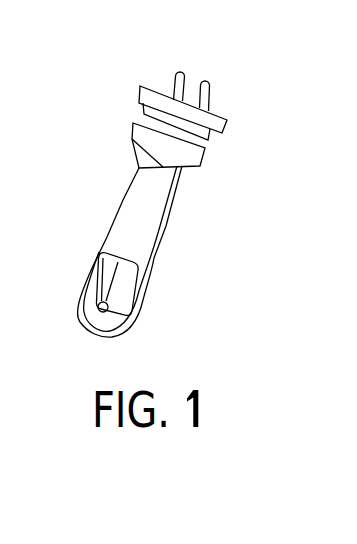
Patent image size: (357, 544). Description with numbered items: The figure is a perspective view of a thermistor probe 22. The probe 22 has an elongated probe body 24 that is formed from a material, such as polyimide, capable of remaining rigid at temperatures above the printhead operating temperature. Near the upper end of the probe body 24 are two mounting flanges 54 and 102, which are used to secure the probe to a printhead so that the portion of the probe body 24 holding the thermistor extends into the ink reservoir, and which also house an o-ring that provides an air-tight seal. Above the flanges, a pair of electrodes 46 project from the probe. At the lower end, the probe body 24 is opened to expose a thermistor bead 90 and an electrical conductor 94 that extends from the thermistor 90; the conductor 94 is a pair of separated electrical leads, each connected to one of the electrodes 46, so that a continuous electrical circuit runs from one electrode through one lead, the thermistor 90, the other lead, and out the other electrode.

The thermistor probe 22 is at (116, 197).
The probe body 24 is at (153, 204).
The electrodes 46 is at (198, 67).
The mounting flange 54 is at (210, 133).
The thermistor 90 is at (91, 307).
The electrical conductor 94 is at (100, 268).
The mounting flange 102 is at (131, 129).